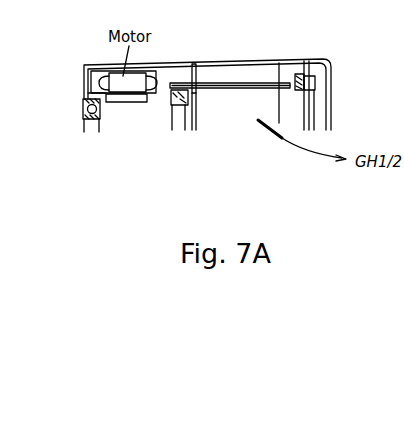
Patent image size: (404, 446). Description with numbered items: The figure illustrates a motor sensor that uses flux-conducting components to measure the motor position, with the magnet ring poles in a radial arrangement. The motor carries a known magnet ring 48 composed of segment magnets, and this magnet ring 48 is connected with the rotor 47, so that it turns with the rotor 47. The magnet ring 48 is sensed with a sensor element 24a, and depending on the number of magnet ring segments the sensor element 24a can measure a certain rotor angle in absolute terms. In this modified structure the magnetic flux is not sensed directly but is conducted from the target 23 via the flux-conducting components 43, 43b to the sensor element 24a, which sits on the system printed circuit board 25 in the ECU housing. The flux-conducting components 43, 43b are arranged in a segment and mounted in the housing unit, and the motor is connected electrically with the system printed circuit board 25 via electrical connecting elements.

The rotor 47 is at (157, 102).
The target 23 is at (172, 91).
The magnet ring 48 is at (195, 72).
The flux-conducting component 43 is at (247, 83).
The sensor element 24a is at (300, 63).
The flux-conducting component 43b is at (315, 81).
The system printed circuit board 25 is at (312, 91).